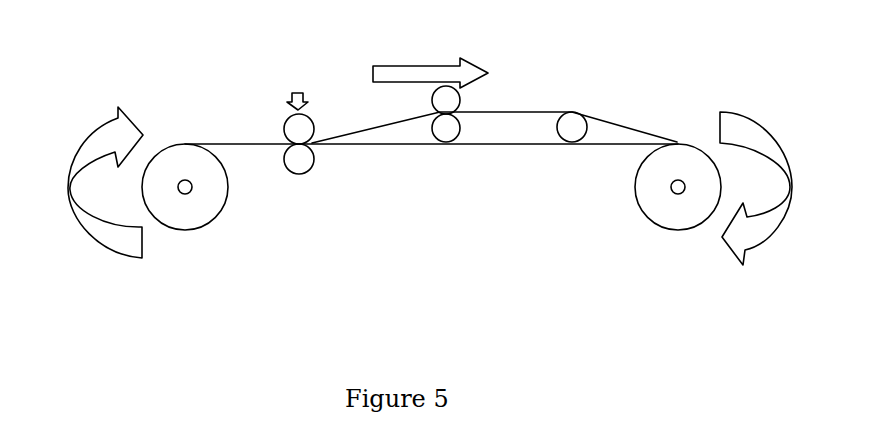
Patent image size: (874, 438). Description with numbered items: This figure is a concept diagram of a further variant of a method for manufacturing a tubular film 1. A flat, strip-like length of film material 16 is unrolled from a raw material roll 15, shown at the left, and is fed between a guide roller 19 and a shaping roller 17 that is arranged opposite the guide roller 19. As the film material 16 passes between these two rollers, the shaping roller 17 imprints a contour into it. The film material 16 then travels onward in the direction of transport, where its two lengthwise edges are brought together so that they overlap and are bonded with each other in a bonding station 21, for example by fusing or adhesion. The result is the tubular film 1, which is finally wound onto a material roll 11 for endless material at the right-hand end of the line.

The tubular film 1 is at (548, 112).
The material roll 11 is at (677, 230).
The raw material roll 15 is at (195, 226).
The film material 16 is at (262, 143).
The shaping roller 17 is at (315, 126).
The guide roller 19 is at (302, 172).
The bonding station 21 is at (460, 100).